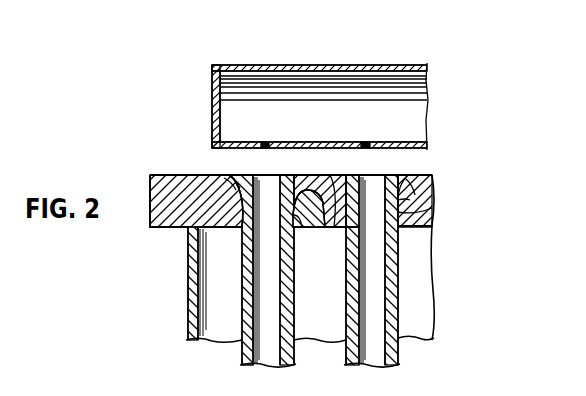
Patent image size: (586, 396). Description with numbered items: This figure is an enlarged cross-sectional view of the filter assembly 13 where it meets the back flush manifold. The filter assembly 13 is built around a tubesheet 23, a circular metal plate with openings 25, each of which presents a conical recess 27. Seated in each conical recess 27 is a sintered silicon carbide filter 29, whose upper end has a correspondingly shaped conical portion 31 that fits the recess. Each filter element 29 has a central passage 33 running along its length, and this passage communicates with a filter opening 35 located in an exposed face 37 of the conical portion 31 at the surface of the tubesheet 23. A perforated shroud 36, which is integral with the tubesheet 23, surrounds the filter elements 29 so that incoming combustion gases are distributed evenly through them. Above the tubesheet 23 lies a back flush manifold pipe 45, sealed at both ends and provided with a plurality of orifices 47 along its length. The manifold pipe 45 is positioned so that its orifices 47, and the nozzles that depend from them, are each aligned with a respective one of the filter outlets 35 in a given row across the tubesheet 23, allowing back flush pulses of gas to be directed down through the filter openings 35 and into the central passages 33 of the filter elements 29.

The filter assembly 13 is at (444, 261).
The tubesheet 23 is at (180, 212).
The openings 25 is at (302, 228).
The conical recess 27 is at (232, 173).
The sintered silicon carbide filter 29 is at (288, 281).
The conical portion 31 is at (418, 200).
The central passage 33 is at (272, 352).
The filter opening 35 is at (267, 175).
The perforated shroud 36 is at (190, 298).
The exposed face 37 is at (301, 176).
The back flush manifold pipe 45 is at (283, 65).
The orifices 47 is at (268, 142).